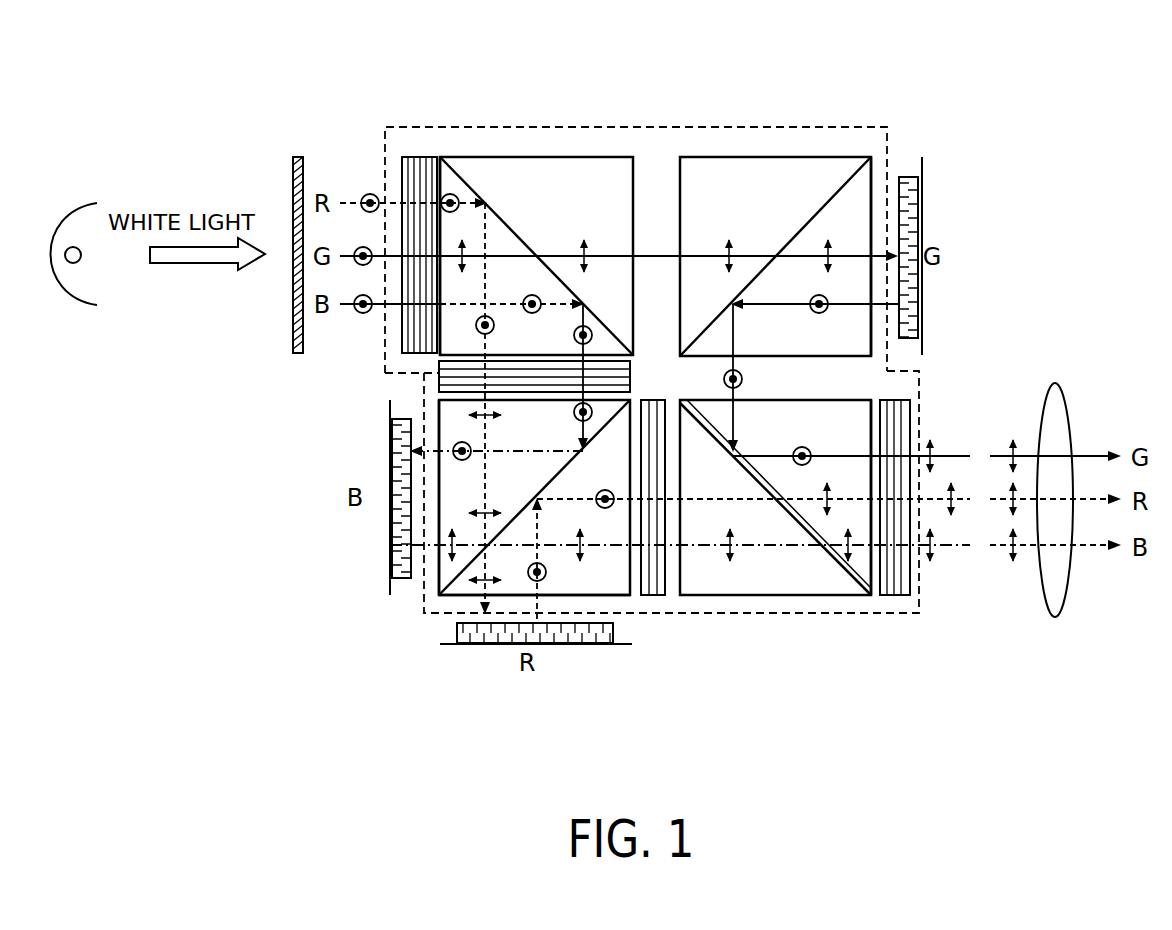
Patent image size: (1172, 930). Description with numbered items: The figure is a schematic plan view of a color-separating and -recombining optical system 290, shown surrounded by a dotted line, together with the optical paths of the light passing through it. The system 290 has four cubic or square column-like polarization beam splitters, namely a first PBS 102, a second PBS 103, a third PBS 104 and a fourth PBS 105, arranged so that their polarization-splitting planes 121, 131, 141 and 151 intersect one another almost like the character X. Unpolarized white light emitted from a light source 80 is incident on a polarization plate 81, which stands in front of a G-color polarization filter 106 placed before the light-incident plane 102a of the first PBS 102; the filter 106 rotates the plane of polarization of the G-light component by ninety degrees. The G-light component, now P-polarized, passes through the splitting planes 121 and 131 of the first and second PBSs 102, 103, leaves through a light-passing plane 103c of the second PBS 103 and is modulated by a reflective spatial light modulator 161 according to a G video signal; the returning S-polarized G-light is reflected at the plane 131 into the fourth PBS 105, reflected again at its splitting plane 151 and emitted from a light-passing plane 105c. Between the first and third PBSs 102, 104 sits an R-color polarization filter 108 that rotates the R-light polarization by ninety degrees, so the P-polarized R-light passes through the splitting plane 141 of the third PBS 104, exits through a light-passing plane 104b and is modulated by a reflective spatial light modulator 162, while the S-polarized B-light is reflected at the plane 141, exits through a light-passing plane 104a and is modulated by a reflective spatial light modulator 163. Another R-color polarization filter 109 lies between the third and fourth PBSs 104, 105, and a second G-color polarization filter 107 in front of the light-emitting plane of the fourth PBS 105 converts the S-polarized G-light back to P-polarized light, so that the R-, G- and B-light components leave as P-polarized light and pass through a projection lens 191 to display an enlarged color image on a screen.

The light source 80 is at (80, 306).
The polarization plate 81 is at (293, 318).
The G-color polarization filter 106 is at (402, 168).
The first polarization beam splitter 102 is at (593, 185).
The incident face of first polarizing beam splitter 102a is at (437, 168).
The polarization-splitting plane 121 is at (505, 215).
The color-separating and -recombining optical system 290 is at (662, 147).
The second polarization beam splitter 103 is at (745, 180).
The polarization-splitting plane 131 is at (838, 190).
The light-passing plane 103c is at (872, 172).
The reflective spatial light modulator 161 is at (917, 197).
The R-color polarization filter 108 is at (439, 372).
The third polarization beam splitter 104 is at (440, 575).
The light-passing plane 104a is at (439, 475).
The light-passing plane 104b is at (512, 595).
The polarization-splitting plane 141 is at (457, 580).
The reflective spatial light modulator 163 is at (390, 543).
The reflective spatial light modulator 162 is at (593, 645).
The R-color polarization filter 109 is at (657, 595).
The fourth polarization beam splitter 105 is at (770, 580).
The polarization-splitting plane 151 is at (838, 565).
The light-passing plane 105c is at (885, 415).
The G-color polarization filter 107 is at (898, 595).
The projection lens 191 is at (1057, 408).